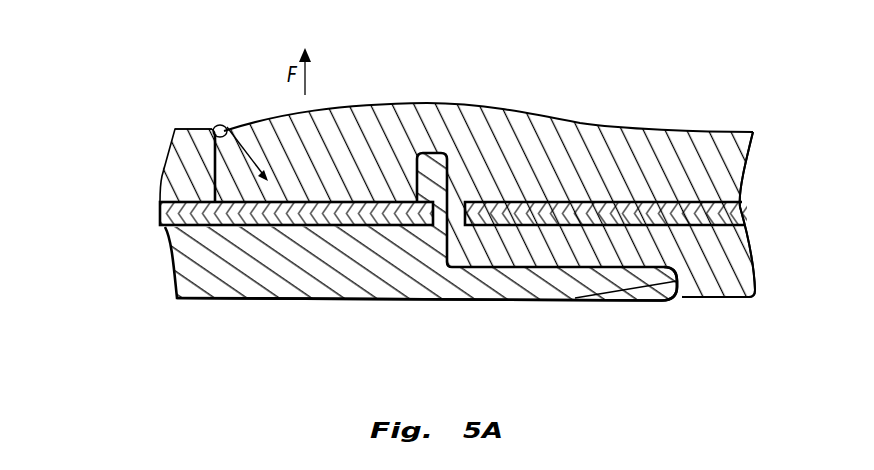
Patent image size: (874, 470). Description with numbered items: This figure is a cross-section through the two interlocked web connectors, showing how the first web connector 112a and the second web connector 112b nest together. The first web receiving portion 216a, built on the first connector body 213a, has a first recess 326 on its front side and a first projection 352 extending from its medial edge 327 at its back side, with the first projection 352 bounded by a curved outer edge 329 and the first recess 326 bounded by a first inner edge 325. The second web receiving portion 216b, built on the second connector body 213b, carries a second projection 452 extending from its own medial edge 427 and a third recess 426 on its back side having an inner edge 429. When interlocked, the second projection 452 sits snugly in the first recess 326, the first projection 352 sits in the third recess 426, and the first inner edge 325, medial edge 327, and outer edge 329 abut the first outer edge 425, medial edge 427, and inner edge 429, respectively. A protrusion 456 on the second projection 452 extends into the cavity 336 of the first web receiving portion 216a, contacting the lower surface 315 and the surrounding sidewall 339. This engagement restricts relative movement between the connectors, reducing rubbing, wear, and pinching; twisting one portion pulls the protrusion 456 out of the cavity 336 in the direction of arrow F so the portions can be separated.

The lower surface 315 is at (280, 200).
The first inner edge 325 is at (220, 128).
The cavity 336 is at (242, 130).
The first outer edge 425 is at (185, 164).
The first connector body 213a is at (166, 213).
The first web receiving portion 216a is at (250, 288).
The first web connector 112a is at (277, 298).
The protrusion 456 is at (338, 183).
The medial edge 427 is at (448, 236).
The sidewall 339 is at (418, 166).
The first recess 326 is at (430, 153).
The second projection 452 is at (448, 174).
The medial edge 327 is at (478, 103).
The second web receiving portion 216b is at (580, 129).
The second web connector 112b is at (728, 130).
The second connector body 213b is at (747, 212).
The first projection 352 is at (519, 283).
The inner edge 429 is at (677, 279).
The third recess 426 is at (587, 266).
The outer edge 329 is at (703, 297).